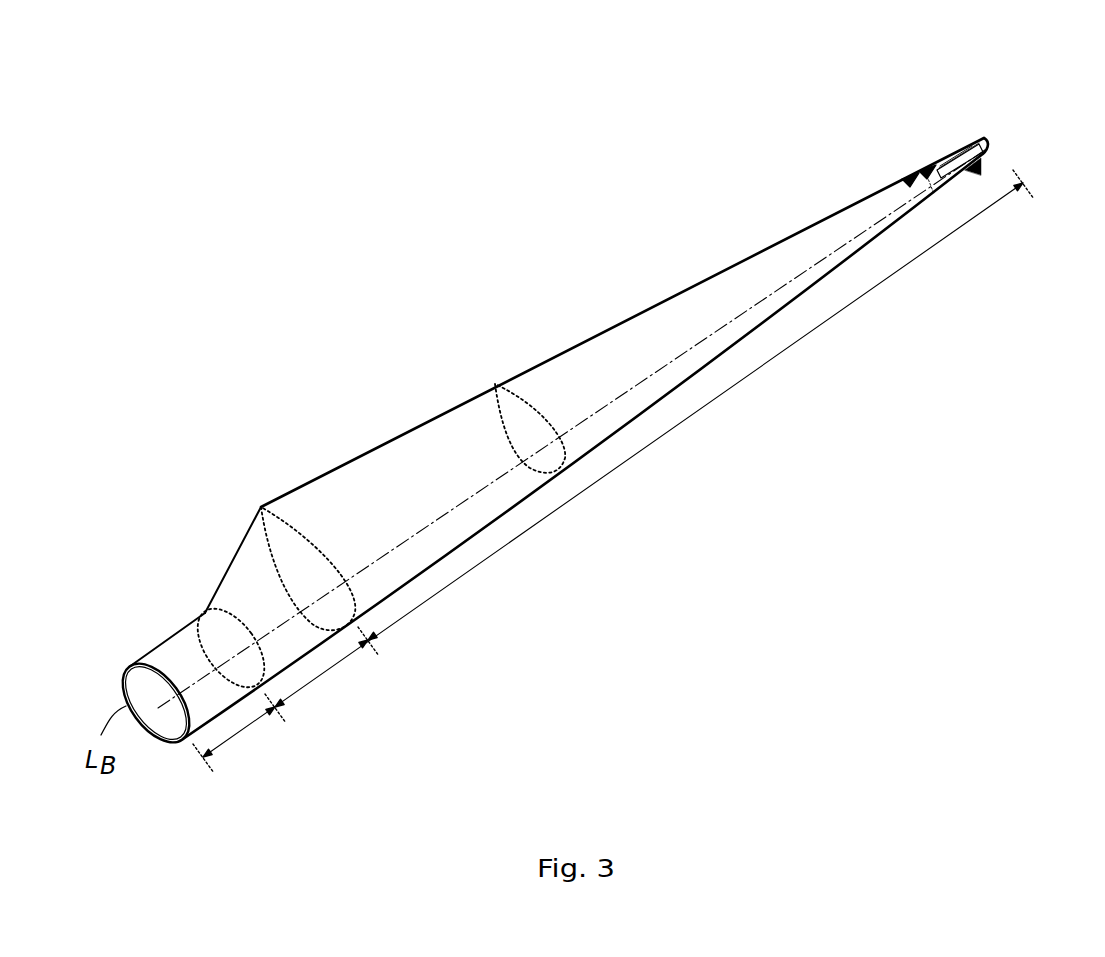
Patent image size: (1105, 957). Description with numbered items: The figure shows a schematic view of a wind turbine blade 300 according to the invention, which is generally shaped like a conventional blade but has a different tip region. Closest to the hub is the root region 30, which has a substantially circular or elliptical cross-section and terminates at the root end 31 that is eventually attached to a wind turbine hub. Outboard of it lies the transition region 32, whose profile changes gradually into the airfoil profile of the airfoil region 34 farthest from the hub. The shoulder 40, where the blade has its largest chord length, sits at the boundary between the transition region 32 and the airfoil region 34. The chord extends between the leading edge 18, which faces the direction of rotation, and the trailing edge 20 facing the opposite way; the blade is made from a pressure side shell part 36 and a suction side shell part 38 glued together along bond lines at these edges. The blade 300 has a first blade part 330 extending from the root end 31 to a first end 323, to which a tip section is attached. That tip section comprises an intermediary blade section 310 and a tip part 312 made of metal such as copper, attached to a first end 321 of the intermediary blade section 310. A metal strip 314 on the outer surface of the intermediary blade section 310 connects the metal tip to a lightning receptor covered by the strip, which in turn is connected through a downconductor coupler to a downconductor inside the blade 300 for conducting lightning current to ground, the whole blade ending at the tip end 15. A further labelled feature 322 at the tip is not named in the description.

The tip end 15 is at (991, 145).
The leading edge 18 is at (727, 352).
The trailing edge 20 is at (633, 318).
The root region 30 is at (243, 727).
The root end 31 is at (239, 754).
The transition region 32 is at (325, 672).
The airfoil region 34 is at (630, 457).
The pressure side shell part 36 is at (150, 656).
The suction side shell part 38 is at (147, 733).
The shoulder 40 is at (261, 507).
The wind turbine blade 300 is at (406, 332).
The intermediary blade section 310 is at (941, 190).
The tip part 312 is at (953, 147).
The metal strip 314 is at (938, 162).
The first end of the intermediary blade section 321 is at (978, 172).
The tip section 322 is at (914, 170).
The first end of the first blade part 323 is at (906, 182).
The first blade part 330 is at (890, 219).